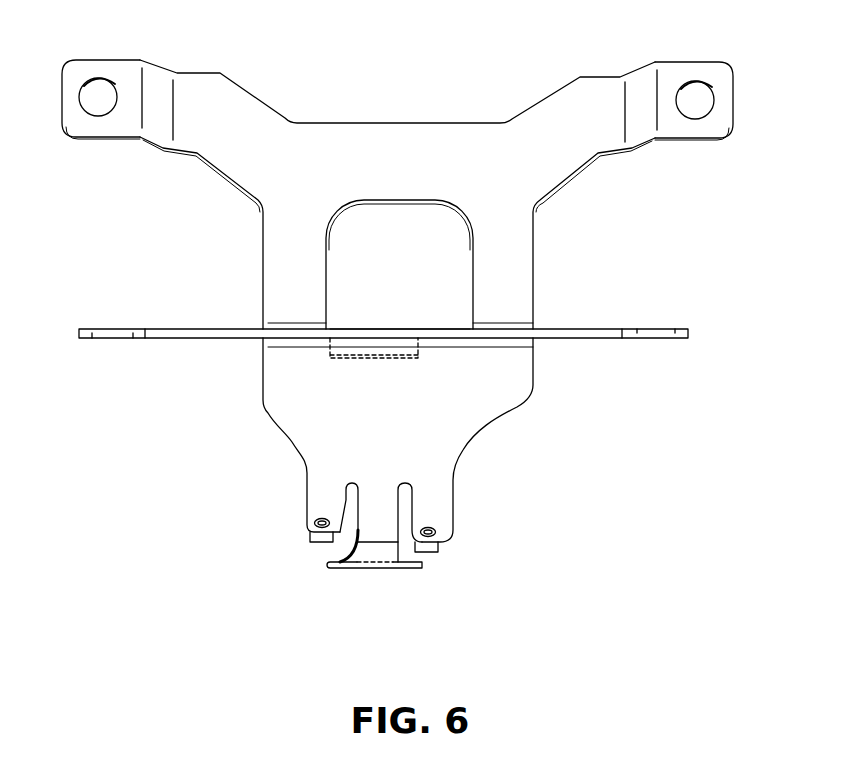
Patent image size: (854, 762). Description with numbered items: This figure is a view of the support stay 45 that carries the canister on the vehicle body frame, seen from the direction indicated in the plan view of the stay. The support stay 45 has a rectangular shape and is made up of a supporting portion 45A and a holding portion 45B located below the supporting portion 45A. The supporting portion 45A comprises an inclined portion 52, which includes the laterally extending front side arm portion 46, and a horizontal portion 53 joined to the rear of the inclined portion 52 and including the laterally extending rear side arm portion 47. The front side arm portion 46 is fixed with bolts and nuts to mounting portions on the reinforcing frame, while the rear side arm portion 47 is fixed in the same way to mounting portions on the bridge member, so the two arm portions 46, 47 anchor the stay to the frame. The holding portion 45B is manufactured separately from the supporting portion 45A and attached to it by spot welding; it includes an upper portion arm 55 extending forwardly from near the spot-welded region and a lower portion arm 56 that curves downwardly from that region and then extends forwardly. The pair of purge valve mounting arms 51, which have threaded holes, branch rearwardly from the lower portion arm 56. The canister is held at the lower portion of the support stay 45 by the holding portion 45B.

The support stay 45 is at (735, 232).
The supporting portion 45A is at (541, 253).
The holding portion 45B is at (527, 410).
The front side arm portion 46 is at (127, 70).
The rear side arm portion 47 is at (187, 330).
The purge valve mounting arms 51 is at (315, 509).
The inclined portion 52 is at (407, 153).
The horizontal portion 53 is at (393, 328).
The upper portion arm 55 is at (375, 362).
The lower portion arm 56 is at (408, 568).